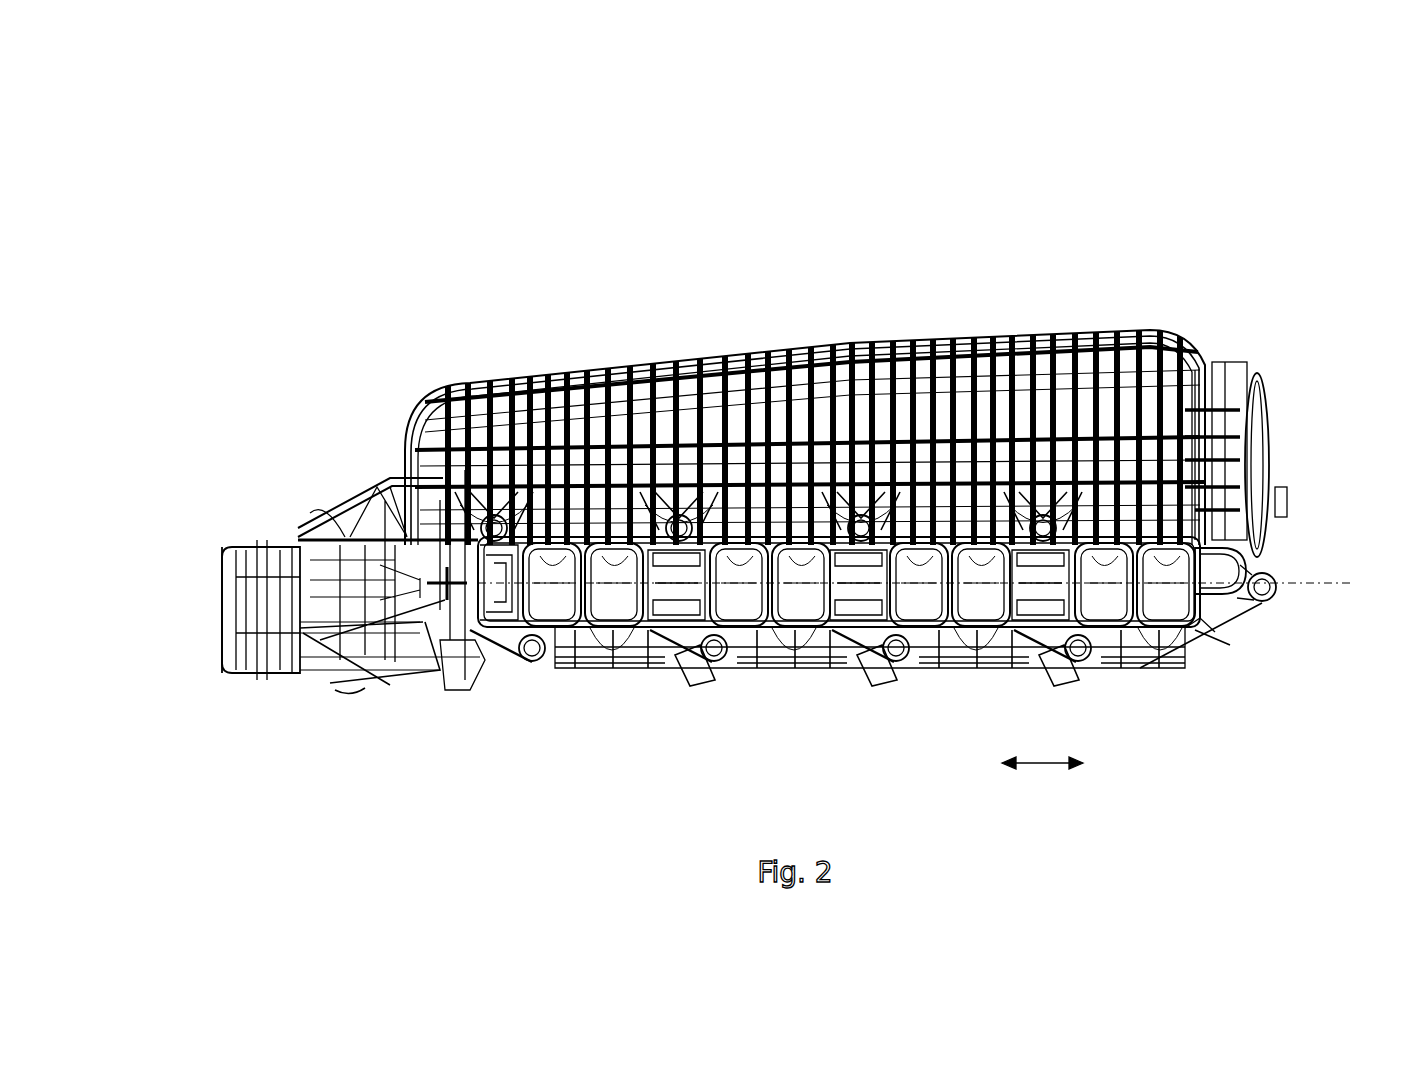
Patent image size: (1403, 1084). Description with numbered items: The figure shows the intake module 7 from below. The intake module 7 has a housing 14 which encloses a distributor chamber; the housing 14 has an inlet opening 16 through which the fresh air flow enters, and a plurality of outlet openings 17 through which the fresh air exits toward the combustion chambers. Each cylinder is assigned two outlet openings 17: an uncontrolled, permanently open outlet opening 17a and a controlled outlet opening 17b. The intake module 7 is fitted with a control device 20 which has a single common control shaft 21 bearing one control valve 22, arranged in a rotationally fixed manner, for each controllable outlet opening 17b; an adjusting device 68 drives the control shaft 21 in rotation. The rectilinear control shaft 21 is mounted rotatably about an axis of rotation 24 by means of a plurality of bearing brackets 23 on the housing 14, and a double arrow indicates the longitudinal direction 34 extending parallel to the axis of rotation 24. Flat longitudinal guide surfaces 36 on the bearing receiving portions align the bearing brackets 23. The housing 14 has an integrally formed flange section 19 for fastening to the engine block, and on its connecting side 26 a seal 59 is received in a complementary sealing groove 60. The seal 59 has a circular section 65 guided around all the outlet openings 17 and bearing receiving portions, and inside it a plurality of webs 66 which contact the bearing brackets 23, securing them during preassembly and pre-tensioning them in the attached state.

The intake module 7 is at (1304, 251).
The housing 14 is at (1207, 355).
The inlet opening 16 is at (1272, 445).
The outlet openings 17 is at (522, 430).
The uncontrolled outlet openings 17a is at (700, 420).
The controlled outlet openings 17b is at (604, 400).
The flange section 19 is at (1283, 597).
The control device 20 is at (215, 585).
The control shaft 21 is at (540, 660).
The control valve 22 is at (613, 610).
The bearing brackets 23 is at (520, 658).
The axis of rotation 24 is at (1350, 576).
The connecting side 26 is at (1215, 641).
The longitudinal direction 34 is at (1043, 768).
The longitudinal guide surfaces 36 is at (486, 440).
The seal 59 is at (1192, 632).
The sealing groove 60 is at (1252, 563).
The circular section 65 is at (468, 655).
The webs 66 is at (584, 665).
The adjusting device 68 is at (252, 555).